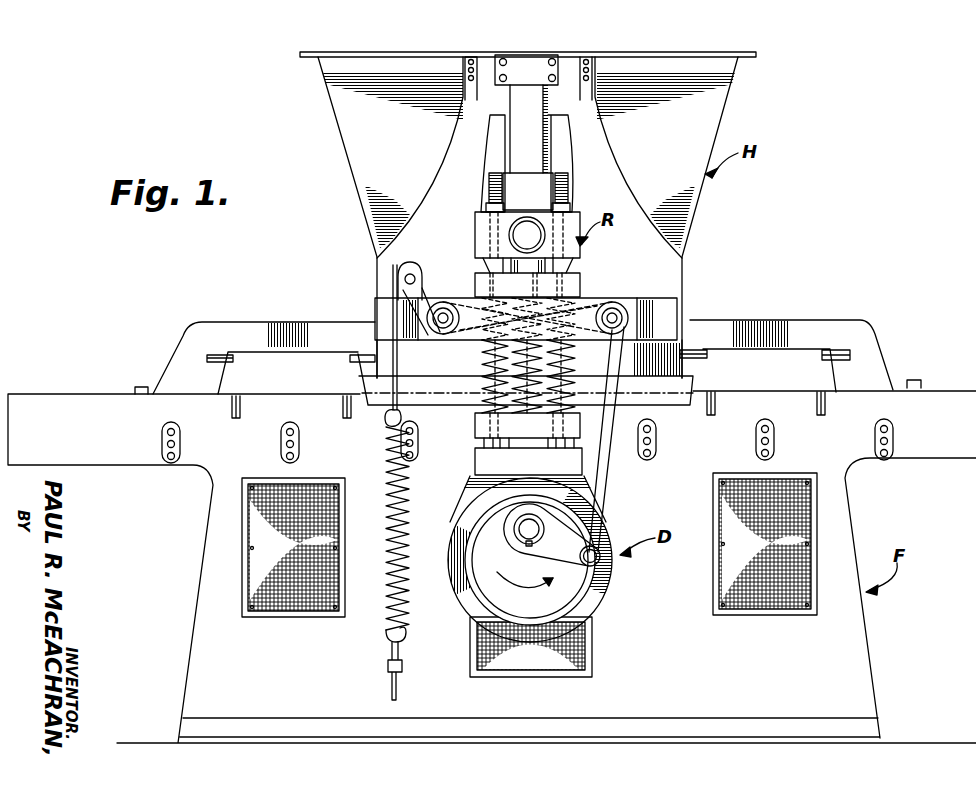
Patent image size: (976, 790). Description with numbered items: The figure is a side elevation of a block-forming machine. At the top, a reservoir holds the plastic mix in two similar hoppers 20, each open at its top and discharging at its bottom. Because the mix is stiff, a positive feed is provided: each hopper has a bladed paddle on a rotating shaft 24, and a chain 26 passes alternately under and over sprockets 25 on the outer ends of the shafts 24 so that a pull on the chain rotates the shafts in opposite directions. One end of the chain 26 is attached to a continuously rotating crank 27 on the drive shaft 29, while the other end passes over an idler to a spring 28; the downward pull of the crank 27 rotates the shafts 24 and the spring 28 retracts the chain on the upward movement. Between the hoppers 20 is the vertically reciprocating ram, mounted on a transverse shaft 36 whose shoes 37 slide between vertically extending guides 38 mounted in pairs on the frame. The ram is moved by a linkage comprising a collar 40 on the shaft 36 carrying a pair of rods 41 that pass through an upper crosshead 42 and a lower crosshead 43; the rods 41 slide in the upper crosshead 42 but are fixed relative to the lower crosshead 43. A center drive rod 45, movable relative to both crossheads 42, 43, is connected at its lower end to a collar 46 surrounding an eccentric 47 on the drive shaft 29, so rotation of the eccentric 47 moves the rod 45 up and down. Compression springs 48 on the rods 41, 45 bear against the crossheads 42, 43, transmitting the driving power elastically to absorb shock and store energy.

The hopper 20 is at (528, 228).
The rotating shaft 24 is at (443, 312).
The sprocket 25 is at (430, 336).
The chain 26 is at (606, 453).
The crank 27 is at (576, 558).
The spring 28 is at (404, 498).
The shaft 29 is at (536, 529).
The transverse shaft 36 is at (514, 238).
The shoe 37 is at (526, 132).
The guide 38 is at (484, 168).
The collar 40 is at (478, 228).
The rod 41 is at (489, 193).
The upper crosshead 42 is at (576, 284).
The lower crosshead 43 is at (510, 430).
The drive rod 45 is at (522, 448).
The collar 46 is at (458, 583).
The eccentric 47 is at (565, 591).
The compression spring 48 is at (481, 363).